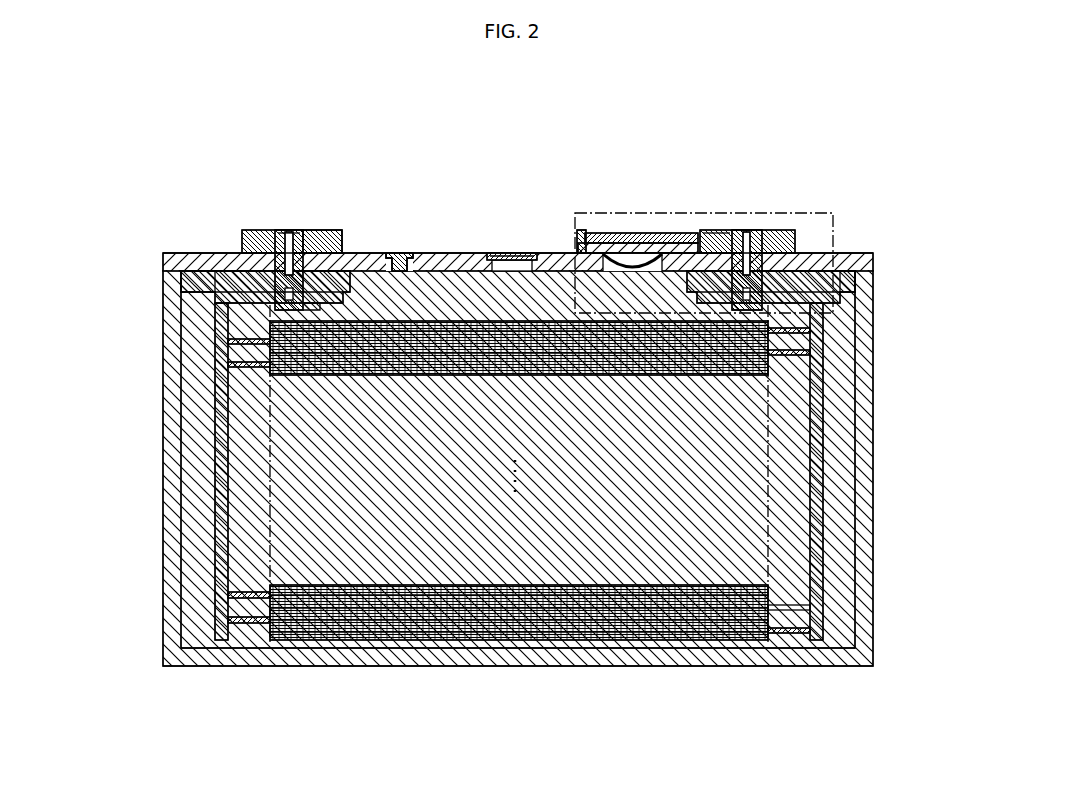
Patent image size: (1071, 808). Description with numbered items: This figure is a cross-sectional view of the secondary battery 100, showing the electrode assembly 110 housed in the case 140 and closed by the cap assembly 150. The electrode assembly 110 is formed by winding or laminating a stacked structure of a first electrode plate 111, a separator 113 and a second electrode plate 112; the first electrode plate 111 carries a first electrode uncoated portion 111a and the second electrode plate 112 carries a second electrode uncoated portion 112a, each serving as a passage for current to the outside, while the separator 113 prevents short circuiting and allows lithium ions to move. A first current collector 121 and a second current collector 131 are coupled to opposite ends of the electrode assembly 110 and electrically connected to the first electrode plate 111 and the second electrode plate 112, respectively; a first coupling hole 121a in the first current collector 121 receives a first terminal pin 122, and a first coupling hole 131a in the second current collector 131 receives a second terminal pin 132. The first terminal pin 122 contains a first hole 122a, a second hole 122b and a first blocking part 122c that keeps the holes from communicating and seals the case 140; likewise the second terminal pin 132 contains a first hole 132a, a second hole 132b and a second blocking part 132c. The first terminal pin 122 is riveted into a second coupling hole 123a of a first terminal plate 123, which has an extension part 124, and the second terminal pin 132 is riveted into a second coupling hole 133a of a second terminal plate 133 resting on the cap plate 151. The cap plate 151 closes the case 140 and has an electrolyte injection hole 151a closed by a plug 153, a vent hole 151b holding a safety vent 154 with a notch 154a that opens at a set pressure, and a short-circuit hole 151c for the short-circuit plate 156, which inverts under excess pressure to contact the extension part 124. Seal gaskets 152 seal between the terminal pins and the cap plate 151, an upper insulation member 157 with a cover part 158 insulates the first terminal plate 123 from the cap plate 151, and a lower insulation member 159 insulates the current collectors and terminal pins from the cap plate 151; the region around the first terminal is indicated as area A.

The secondary battery 100 is at (113, 157).
The electrode assembly 110 is at (424, 648).
The first electrode plate 111 is at (650, 630).
The first electrode uncoated portion 111a is at (788, 635).
The second electrode plate 112 is at (350, 622).
The second electrode uncoated portion 112a is at (247, 625).
The separator 113 is at (553, 634).
The first current collector 121 is at (828, 290).
The first coupling hole 121a is at (823, 307).
The first terminal pin 122 is at (760, 240).
The first hole 122a is at (748, 238).
The second hole 122b is at (772, 353).
The first blocking part 122c is at (806, 292).
The first terminal plate 123 is at (706, 230).
The second coupling hole 123a is at (742, 242).
The extension part 124 is at (675, 248).
The second current collector 131 is at (235, 280).
The first coupling hole 131a is at (215, 307).
The second terminal pin 132 is at (320, 230).
The first hole 132a is at (290, 245).
The second hole 132b is at (232, 362).
The second blocking part 132c is at (230, 295).
The second terminal plate 133 is at (262, 229).
The second coupling hole 133a is at (283, 230).
The case 140 is at (870, 462).
The cap assembly 150 is at (442, 165).
The cap plate 151 is at (441, 253).
The electrolyte injection hole 151a is at (398, 272).
The vent hole 151b is at (512, 272).
The short-circuit hole 151c is at (618, 272).
The seal gasket 152 is at (327, 229).
The plug 153 is at (399, 253).
The safety vent 154 is at (495, 253).
The notch 154a is at (522, 253).
The short-circuit plate 156 is at (606, 258).
The upper insulation member 157 is at (581, 231).
The cover part 158 is at (632, 236).
The lower insulation member 159 is at (192, 286).
The short-circuit region A is at (836, 231).